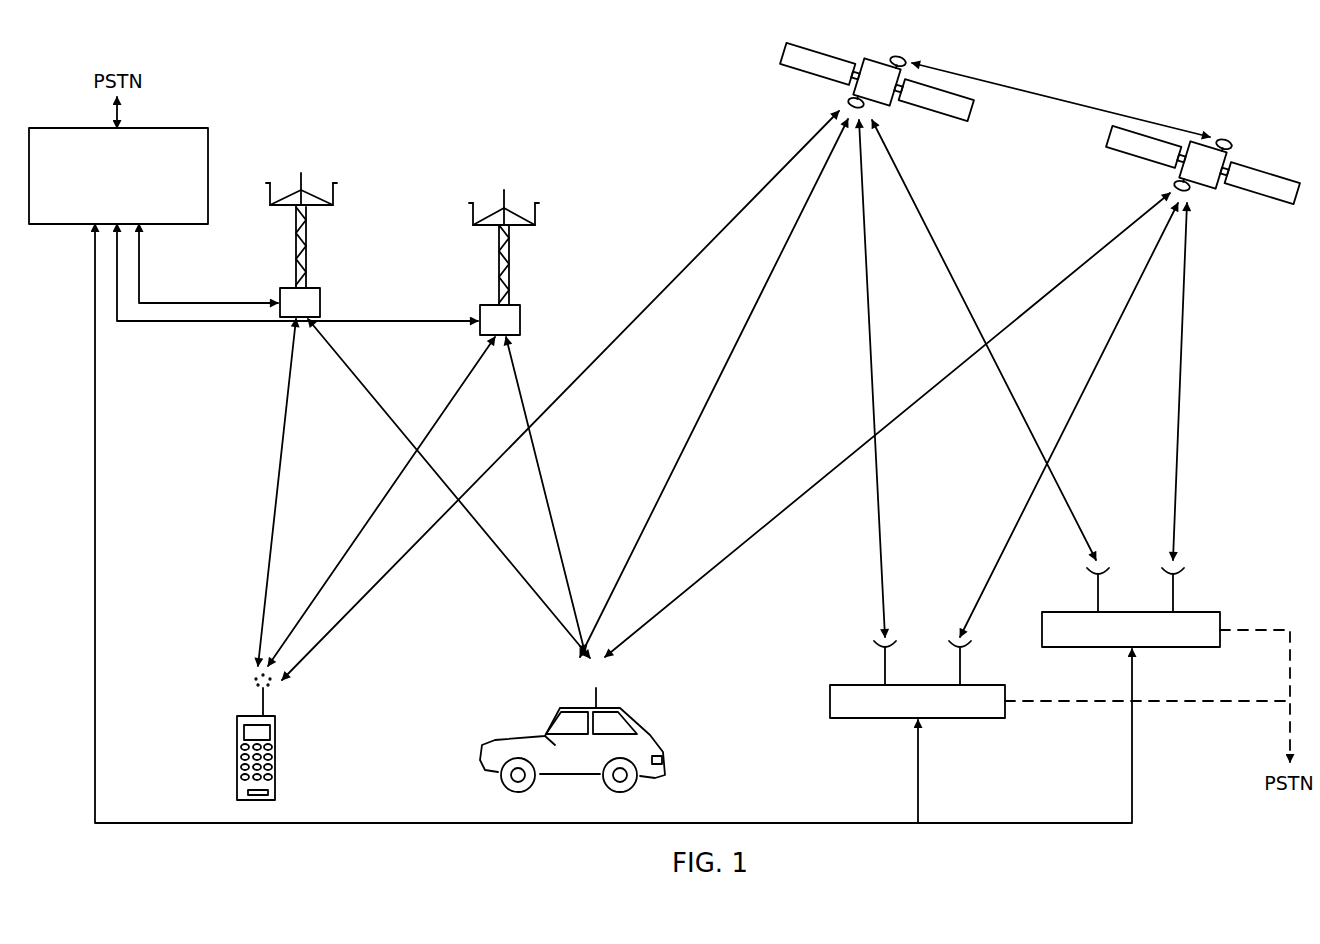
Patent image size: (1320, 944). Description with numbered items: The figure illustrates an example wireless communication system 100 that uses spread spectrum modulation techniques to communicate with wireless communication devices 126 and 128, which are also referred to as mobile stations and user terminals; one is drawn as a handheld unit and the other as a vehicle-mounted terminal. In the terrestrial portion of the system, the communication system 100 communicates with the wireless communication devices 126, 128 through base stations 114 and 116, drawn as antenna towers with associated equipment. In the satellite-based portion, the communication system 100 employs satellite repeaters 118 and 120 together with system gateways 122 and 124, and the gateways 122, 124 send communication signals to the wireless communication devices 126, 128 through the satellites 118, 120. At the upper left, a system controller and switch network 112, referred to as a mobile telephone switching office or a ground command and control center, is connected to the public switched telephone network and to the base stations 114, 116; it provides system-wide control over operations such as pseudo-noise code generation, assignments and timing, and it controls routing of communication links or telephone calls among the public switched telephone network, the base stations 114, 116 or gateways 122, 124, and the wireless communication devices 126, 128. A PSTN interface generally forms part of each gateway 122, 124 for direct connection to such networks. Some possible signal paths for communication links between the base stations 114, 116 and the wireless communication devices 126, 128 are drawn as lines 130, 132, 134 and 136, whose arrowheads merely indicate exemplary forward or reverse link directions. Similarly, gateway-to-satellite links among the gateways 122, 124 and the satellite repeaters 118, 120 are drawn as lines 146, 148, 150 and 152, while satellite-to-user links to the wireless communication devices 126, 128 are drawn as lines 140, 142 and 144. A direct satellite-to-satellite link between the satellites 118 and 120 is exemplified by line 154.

The communication system 100 is at (512, 91).
The system controller and switch network 112 is at (188, 128).
The base station 114 is at (312, 288).
The base station 116 is at (512, 305).
The satellite 118 is at (871, 64).
The satellite 120 is at (1230, 160).
The gateway 122 is at (975, 718).
The gateway 124 is at (1190, 647).
The wireless communication device 126 is at (240, 716).
The wireless communication device 128 is at (620, 707).
The line 130 is at (278, 446).
The line 132 is at (490, 545).
The line 134 is at (458, 397).
The line 136 is at (538, 460).
The line 140 is at (712, 241).
The line 142 is at (750, 335).
The line 144 is at (1055, 287).
The line 146 is at (879, 513).
The line 148 is at (928, 233).
The line 150 is at (1078, 400).
The line 152 is at (1180, 315).
The line 154 is at (1050, 94).